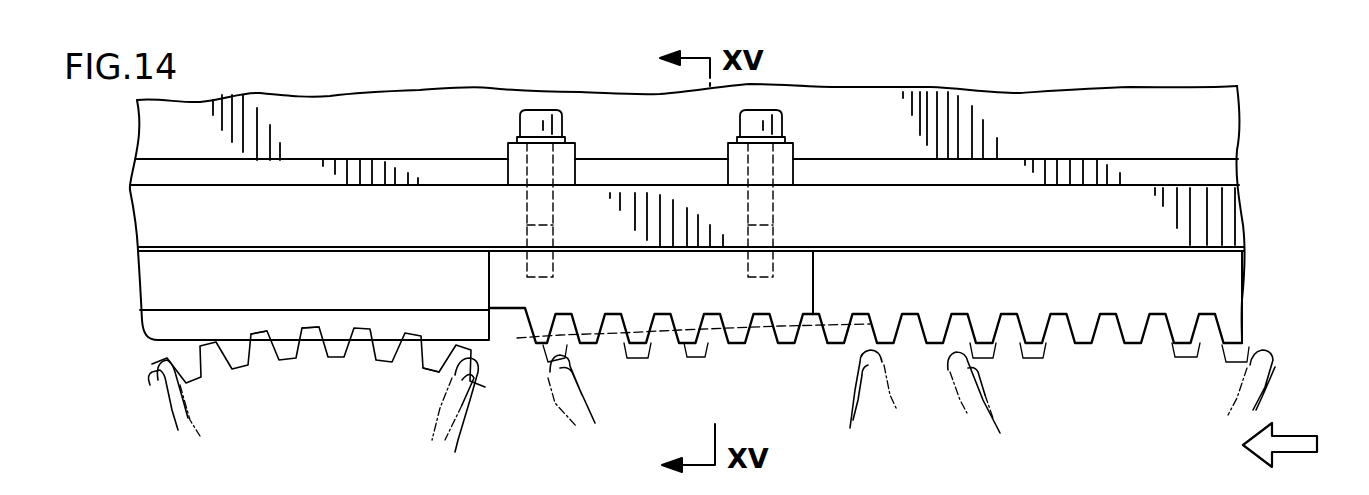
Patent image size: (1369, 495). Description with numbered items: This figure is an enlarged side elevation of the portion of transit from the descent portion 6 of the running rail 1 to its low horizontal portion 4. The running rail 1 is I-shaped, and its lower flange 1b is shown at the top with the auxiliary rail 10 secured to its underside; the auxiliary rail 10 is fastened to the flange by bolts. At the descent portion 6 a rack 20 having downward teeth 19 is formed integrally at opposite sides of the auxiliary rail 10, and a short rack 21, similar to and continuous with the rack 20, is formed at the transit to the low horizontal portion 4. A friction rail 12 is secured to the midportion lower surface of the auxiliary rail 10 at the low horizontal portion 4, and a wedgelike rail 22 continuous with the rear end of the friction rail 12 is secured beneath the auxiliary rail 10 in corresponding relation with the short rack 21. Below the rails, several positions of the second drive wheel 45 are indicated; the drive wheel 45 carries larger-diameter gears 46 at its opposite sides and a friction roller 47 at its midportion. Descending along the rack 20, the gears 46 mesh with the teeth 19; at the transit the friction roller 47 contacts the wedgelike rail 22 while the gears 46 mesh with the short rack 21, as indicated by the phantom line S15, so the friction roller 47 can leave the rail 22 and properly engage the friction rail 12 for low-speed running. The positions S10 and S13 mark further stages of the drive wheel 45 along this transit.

The running rail 1 is at (1226, 118).
The lower flange 1b is at (1226, 205).
The auxiliary rail 10 is at (1228, 272).
The low horizontal portion 4 is at (322, 142).
The descent portion 6 is at (1045, 138).
The friction rail 12 is at (162, 327).
The short rack 21 is at (530, 320).
The rack 20 is at (917, 315).
The wedgelike rail 22 is at (562, 340).
The downward teeth 19 is at (937, 337).
The second drive wheel 45 is at (147, 385).
The gears 46 is at (262, 330).
The friction roller 47 is at (443, 357).
The spacing S10 is at (323, 330).
The phantom line S15 is at (613, 322).
The spacing S13 is at (1270, 347).